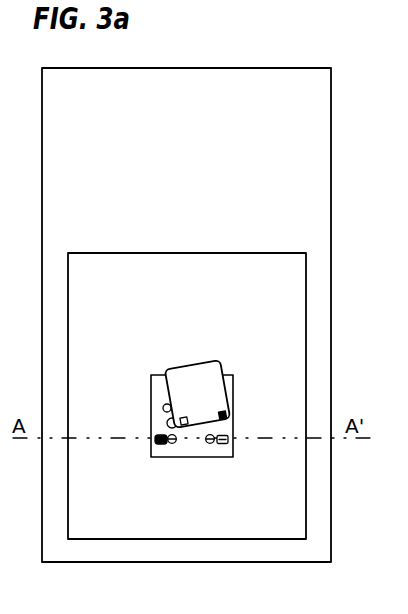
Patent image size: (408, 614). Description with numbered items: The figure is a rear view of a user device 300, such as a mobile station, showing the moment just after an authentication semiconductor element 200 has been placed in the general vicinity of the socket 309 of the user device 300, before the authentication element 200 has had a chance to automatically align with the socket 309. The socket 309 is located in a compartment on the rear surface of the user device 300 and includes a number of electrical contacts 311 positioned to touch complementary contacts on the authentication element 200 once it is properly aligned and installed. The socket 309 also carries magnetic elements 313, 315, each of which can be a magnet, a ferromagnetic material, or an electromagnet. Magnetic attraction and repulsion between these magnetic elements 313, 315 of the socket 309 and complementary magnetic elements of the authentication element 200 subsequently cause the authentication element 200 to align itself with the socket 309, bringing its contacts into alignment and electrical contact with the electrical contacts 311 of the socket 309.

The user device 300 is at (237, 45).
The authentication semiconductor element 200 is at (169, 363).
The socket 309 is at (228, 374).
The magnetic element 313 is at (154, 438).
The electrical contacts 311 is at (175, 444).
The magnetic element 315 is at (222, 444).